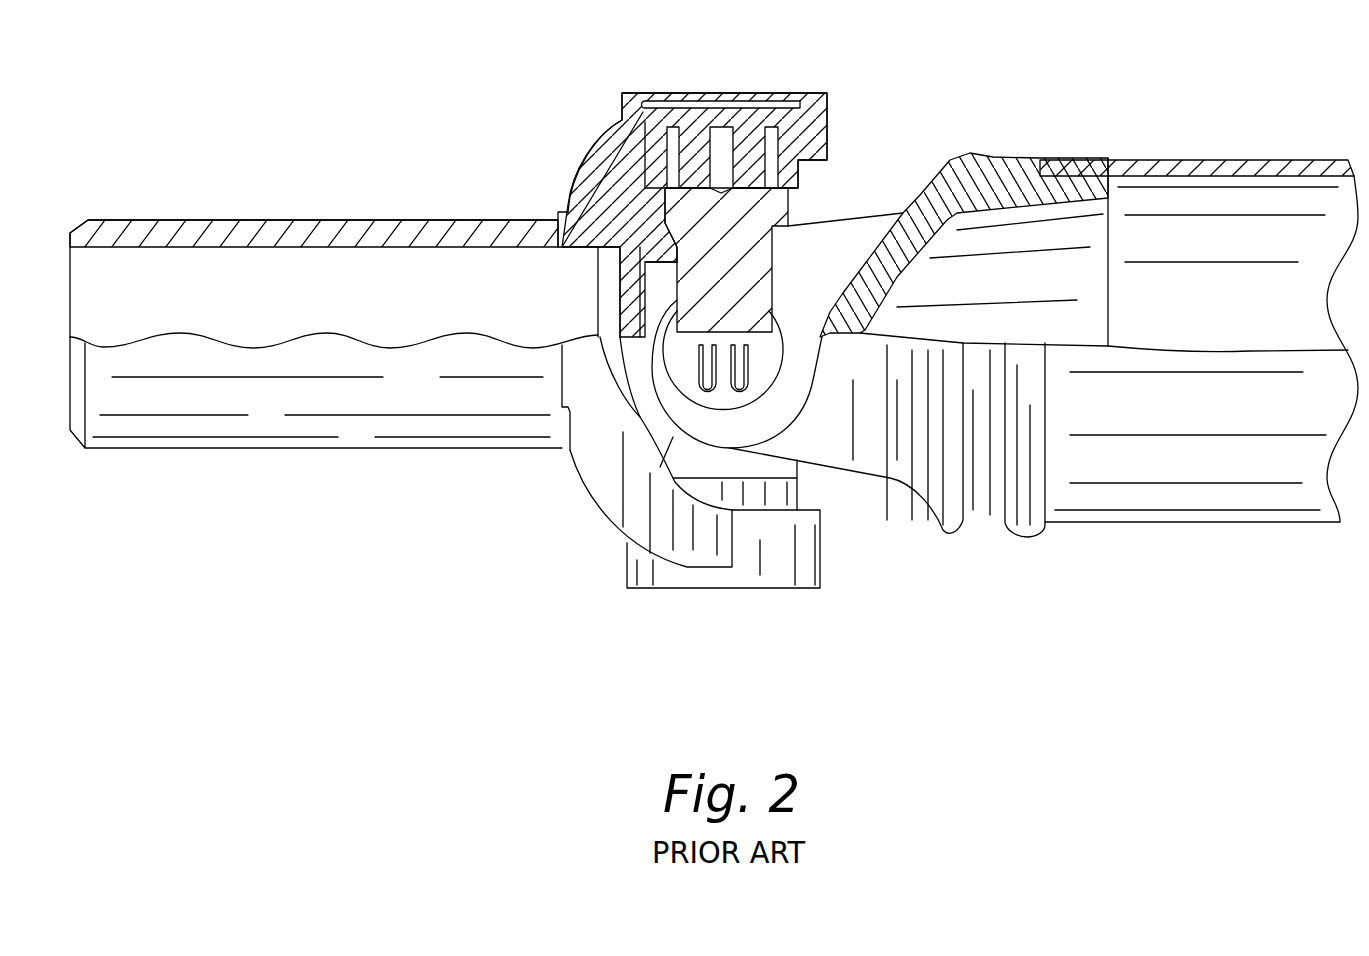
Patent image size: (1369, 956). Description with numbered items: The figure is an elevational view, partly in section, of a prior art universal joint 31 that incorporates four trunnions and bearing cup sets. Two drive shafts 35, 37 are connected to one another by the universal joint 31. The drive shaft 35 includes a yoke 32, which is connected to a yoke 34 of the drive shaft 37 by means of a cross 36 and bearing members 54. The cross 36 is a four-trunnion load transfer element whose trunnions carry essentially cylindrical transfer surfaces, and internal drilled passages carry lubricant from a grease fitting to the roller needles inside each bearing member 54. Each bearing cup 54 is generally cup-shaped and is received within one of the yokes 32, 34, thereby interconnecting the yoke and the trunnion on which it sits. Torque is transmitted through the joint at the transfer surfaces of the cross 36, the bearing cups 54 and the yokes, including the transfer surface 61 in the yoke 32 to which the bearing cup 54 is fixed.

The universal joint 31 is at (747, 612).
The yoke 32 is at (605, 185).
The yoke 34 is at (795, 387).
The drive shaft 35 is at (358, 218).
The cross 36 is at (763, 260).
The drive shaft 37 is at (1253, 160).
The bearing member 54 is at (738, 112).
The transfer surface 61 is at (668, 110).